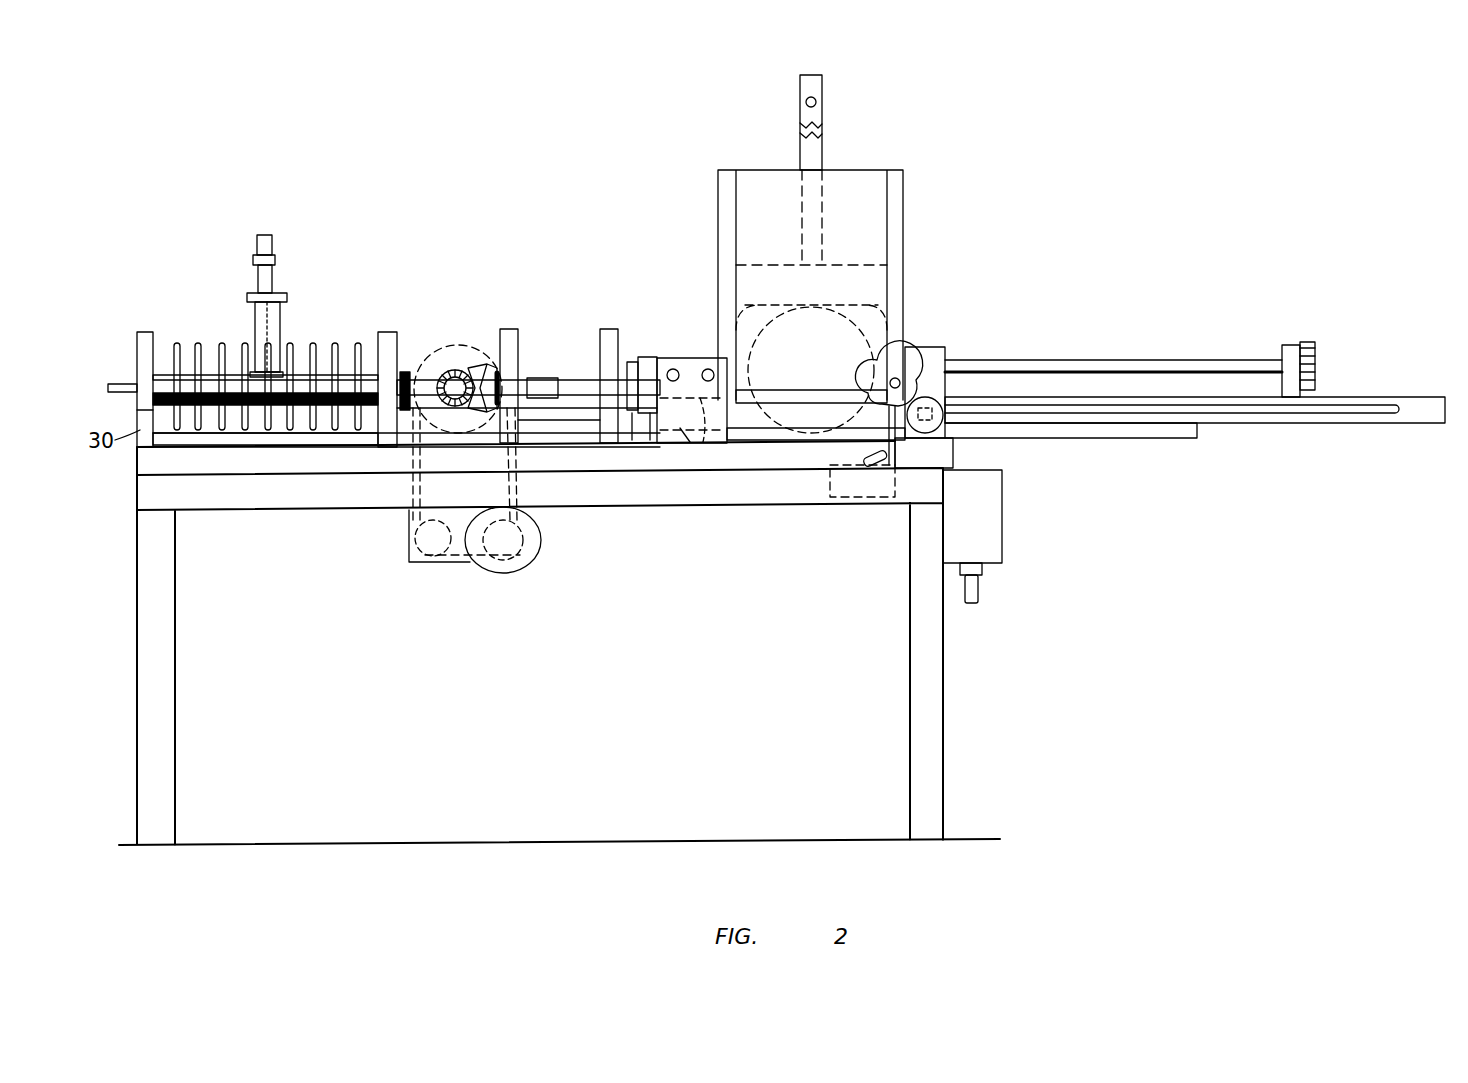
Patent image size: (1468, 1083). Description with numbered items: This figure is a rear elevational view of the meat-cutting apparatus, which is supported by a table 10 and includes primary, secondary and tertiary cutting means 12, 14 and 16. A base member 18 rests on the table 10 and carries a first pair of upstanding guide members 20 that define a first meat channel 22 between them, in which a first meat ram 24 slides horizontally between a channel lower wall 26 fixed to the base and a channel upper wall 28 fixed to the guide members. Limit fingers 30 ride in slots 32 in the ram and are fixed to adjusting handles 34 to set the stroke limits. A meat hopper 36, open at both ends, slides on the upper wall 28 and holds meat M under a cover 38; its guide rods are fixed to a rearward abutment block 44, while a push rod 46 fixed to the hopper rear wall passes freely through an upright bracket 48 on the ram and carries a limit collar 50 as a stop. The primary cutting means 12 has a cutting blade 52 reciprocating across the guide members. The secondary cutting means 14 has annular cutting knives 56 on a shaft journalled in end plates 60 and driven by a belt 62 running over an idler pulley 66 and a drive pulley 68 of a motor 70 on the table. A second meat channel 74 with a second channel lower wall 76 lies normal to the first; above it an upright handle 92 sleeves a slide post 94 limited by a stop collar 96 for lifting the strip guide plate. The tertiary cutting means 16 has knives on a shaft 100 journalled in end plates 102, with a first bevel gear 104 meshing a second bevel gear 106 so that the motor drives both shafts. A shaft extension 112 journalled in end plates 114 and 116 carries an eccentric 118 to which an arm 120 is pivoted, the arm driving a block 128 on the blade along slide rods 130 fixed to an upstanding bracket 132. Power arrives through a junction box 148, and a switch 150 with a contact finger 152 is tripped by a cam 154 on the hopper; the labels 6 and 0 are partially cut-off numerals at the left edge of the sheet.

The table 10 is at (220, 500).
The primary cutting means 12 is at (692, 312).
The secondary cutting means 14 is at (470, 278).
The tertiary cutting means 16 is at (322, 303).
The base member 18 is at (340, 468).
The guide members 20 is at (840, 374).
The first meat channel 22 is at (585, 425).
The first meat ram 24 is at (1408, 397).
The channel lower wall 26 is at (770, 432).
The channel upper wall 28 is at (760, 392).
The limit fingers 30 is at (952, 386).
The slots 32 is at (1345, 408).
The adjusting handles 34 is at (953, 450).
The meat hopper 36 is at (905, 187).
The cover 38 is at (832, 265).
The rearward abutment block 44 is at (945, 358).
The push rod 46 is at (1090, 366).
The upright bracket 48 is at (1290, 345).
The limit collar 50 is at (1306, 342).
The cutting blade 52 is at (690, 428).
The cutting knives 56 is at (198, 343).
The end plates 60 is at (512, 432).
The belt 62 is at (410, 490).
The idler pulley 66 is at (412, 565).
The drive pulley 68 is at (530, 562).
The motor 70 is at (503, 573).
The second meat channel 74 is at (322, 420).
The second channel lower wall 76 is at (215, 438).
The upright handle 92 is at (250, 300).
The slide post 94 is at (265, 235).
The stop collar 96 is at (274, 258).
The shaft 100 is at (412, 385).
The end plates 102 is at (145, 332).
The first bevel gear 104 is at (485, 384).
The second bevel gear 106 is at (452, 378).
The shaft extension 112 is at (590, 385).
The end plate 114 is at (510, 329).
The end plate 116 is at (609, 329).
The eccentric 118 is at (633, 415).
The arm 120 is at (652, 415).
The block 128 is at (637, 362).
The slide rods 130 is at (708, 369).
The upstanding bracket 132 is at (687, 430).
The junction box 148 is at (992, 508).
The switch 150 is at (868, 500).
The contact finger 152 is at (880, 420).
The cam 154 is at (902, 352).
The meat M is at (882, 320).
The stub 6 is at (128, 384).
The partial numeral 0 is at (140, 410).